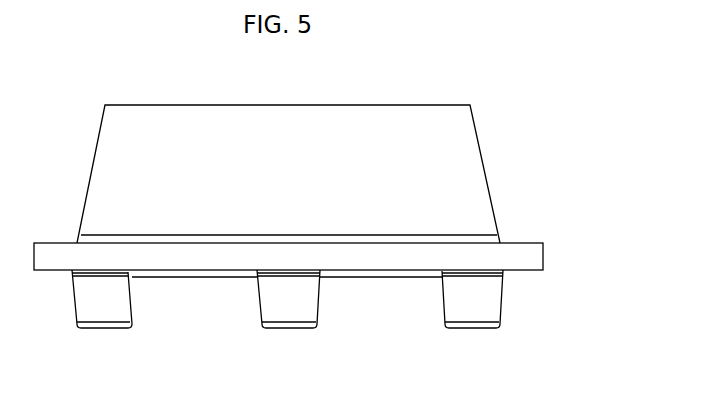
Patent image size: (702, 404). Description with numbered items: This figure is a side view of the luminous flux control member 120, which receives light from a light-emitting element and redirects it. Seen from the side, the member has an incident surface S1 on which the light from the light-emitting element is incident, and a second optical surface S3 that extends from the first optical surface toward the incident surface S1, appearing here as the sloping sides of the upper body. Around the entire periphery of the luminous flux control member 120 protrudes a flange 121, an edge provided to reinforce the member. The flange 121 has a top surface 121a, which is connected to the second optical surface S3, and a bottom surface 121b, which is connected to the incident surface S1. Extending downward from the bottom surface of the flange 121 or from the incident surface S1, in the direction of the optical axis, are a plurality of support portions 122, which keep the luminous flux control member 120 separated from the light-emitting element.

The luminous flux control member 120 is at (323, 232).
The flange 121 is at (316, 260).
The top surface 121a is at (507, 240).
The bottom surface 121b is at (522, 275).
The support portions 122 is at (470, 307).
The incident surface S1 is at (375, 280).
The second optical surface S3 is at (463, 160).